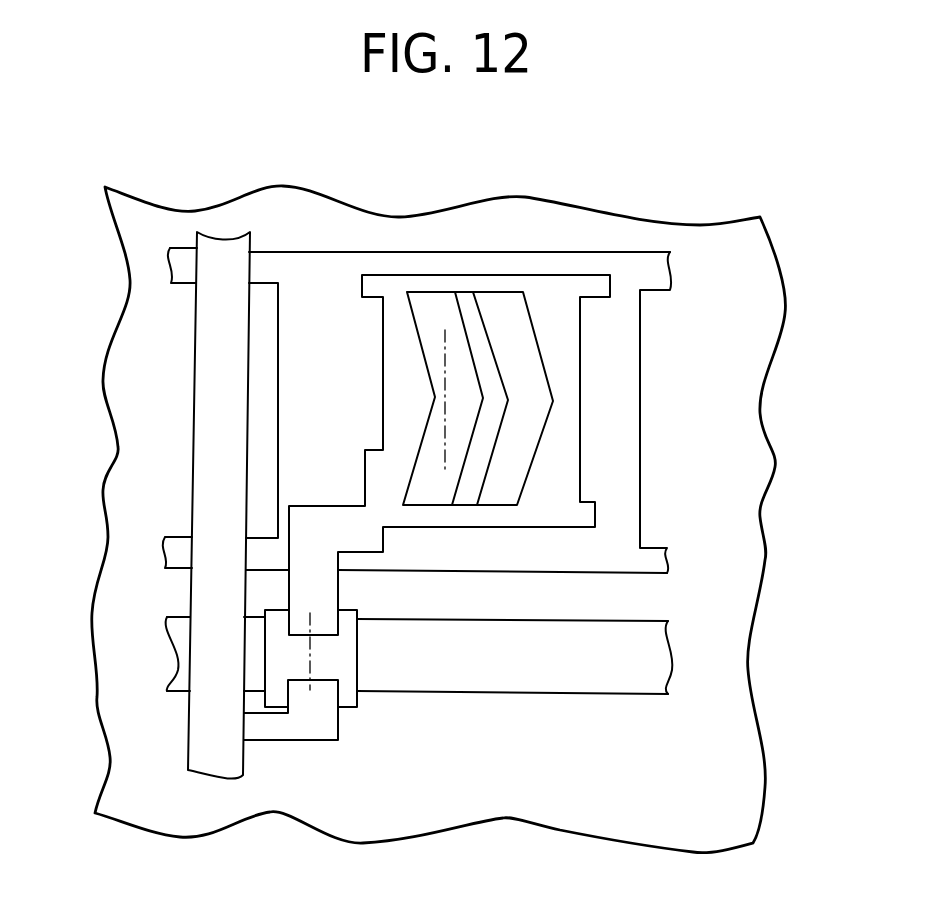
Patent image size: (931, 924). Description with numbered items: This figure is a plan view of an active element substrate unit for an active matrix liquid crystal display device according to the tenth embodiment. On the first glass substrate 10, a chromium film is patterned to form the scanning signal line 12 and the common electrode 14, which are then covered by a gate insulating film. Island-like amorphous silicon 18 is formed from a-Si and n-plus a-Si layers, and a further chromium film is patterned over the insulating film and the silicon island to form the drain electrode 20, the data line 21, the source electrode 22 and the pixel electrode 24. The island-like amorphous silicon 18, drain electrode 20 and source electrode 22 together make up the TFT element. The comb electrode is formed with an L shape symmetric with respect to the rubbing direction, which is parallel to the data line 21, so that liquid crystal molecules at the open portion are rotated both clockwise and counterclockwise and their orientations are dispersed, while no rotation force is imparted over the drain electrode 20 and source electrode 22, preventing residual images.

The first glass substrate 10 is at (732, 475).
The scanning signal line 12 is at (185, 654).
The common electrode 14 is at (177, 556).
The island-like amorphous silicon 18 is at (345, 658).
The drain electrode 20 is at (288, 730).
The data line 21 is at (215, 388).
The source electrode 22 is at (300, 592).
The pixel electrode 24 is at (548, 342).